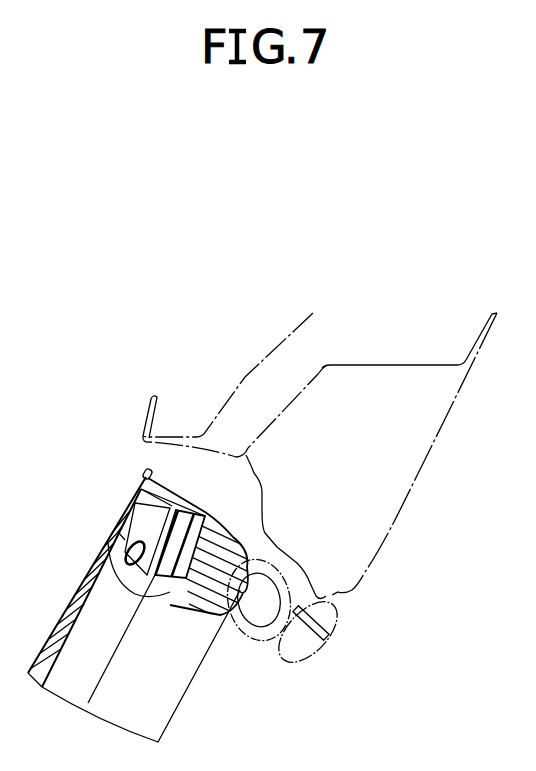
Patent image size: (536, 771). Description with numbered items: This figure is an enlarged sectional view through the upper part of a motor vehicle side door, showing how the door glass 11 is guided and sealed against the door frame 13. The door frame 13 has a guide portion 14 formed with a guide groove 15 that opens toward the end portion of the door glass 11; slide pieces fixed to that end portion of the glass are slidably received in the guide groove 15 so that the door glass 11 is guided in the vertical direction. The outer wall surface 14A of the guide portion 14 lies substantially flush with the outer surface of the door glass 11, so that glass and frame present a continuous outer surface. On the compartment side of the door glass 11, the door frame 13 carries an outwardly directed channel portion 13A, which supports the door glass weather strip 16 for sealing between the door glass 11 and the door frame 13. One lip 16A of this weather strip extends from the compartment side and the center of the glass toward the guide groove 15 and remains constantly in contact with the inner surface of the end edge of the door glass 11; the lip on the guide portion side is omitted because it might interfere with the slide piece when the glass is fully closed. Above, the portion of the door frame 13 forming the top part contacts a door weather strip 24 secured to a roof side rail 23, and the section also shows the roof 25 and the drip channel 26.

The door glass 11 is at (83, 578).
The door frame 13 is at (234, 540).
The channel portion 13A is at (155, 598).
The guide portion 14 is at (158, 502).
The outer wall surface 14A is at (139, 488).
The guide groove 15 is at (126, 511).
The door glass weather strip 16 is at (187, 515).
The lip 16A is at (130, 570).
The roof side rail 23 is at (413, 485).
The door weather strip 24 is at (233, 640).
The roof 25 is at (247, 377).
The drip channel 26 is at (147, 411).